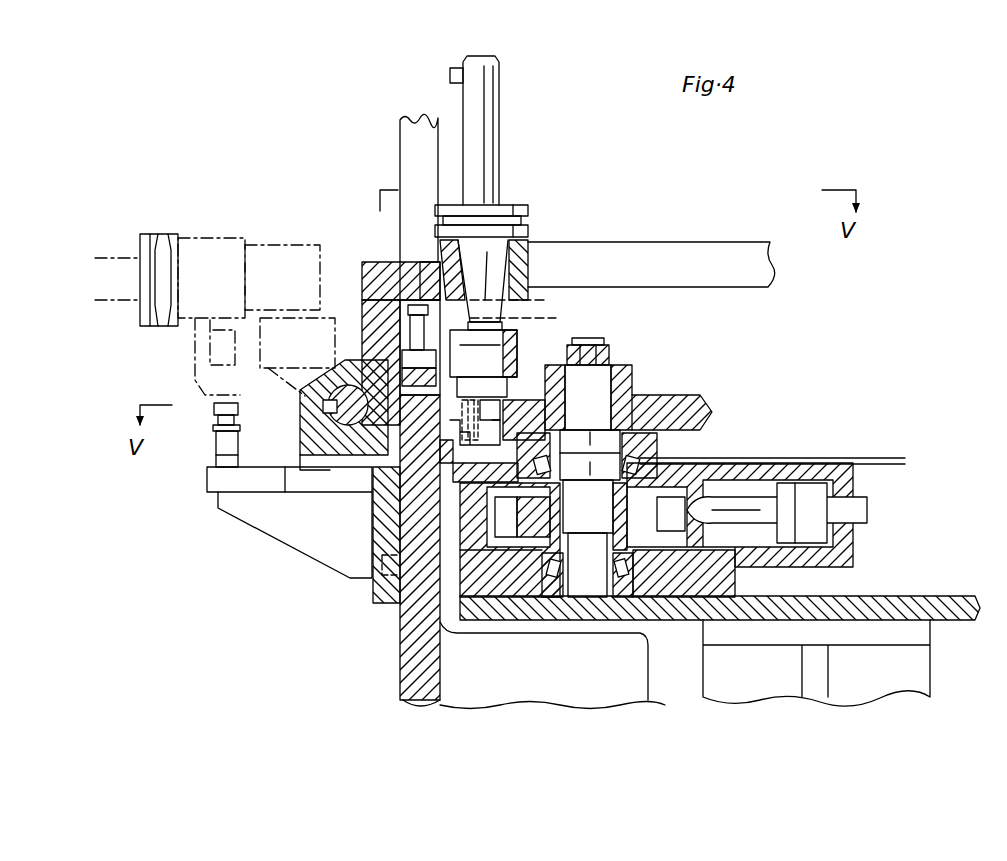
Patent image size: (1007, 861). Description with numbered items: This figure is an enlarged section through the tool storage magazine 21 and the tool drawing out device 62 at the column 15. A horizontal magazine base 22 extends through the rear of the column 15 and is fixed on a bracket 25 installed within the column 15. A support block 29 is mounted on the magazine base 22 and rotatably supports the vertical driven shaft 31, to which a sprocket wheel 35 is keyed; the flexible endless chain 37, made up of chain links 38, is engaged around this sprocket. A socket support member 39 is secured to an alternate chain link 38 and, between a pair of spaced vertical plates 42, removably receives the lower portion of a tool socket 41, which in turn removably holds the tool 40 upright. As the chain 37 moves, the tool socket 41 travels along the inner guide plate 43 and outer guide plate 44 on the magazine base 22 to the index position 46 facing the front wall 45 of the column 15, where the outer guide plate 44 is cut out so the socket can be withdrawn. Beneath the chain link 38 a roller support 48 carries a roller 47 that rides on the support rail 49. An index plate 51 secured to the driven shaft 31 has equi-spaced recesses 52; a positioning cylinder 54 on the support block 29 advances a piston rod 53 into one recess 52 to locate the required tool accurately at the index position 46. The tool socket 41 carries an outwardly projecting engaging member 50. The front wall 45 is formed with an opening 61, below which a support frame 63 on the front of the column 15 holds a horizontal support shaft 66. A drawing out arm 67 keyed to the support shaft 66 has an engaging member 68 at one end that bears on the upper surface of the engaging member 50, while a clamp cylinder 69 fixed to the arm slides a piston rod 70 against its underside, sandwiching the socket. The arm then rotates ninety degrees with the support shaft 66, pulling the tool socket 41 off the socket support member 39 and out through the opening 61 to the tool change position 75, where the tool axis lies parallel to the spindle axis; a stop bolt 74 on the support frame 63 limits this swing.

The column 15 is at (397, 152).
The tool storage magazine 21 is at (688, 226).
The magazine base 22 is at (952, 598).
The bracket 25 is at (920, 672).
The support block 29 is at (686, 597).
The driven shaft 31 is at (596, 372).
The sprocket wheel 35 is at (658, 400).
The chain 37 is at (462, 414).
The chain link 38 is at (503, 430).
The socket support member 39 is at (495, 376).
The tool 40 is at (510, 208).
The tool socket 41 is at (525, 298).
The vertical plate 42 is at (529, 320).
The inner guide plate 43 is at (530, 250).
The outer guide plate 44 is at (410, 262).
The front wall 45 is at (400, 664).
The index position 46 is at (514, 137).
The roller 47 is at (485, 472).
The roller support 48 is at (470, 455).
The support rail 49 is at (487, 492).
The engaging member 50 is at (362, 282).
The index plate 51 is at (532, 520).
The recess 52 is at (672, 500).
The piston rod 53 is at (748, 500).
The positioning cylinder 54 is at (818, 466).
The opening 61 is at (380, 472).
The tool drawing out device 62 is at (348, 250).
The support frame 63 is at (308, 480).
The support shaft 66 is at (318, 420).
The drawing out arm 67 is at (318, 385).
The engaging member 68 is at (395, 264).
The clamp cylinder 69 is at (340, 346).
The piston rod 70 is at (372, 310).
The stop bolt 74 is at (218, 408).
The tool change position 75 is at (124, 290).